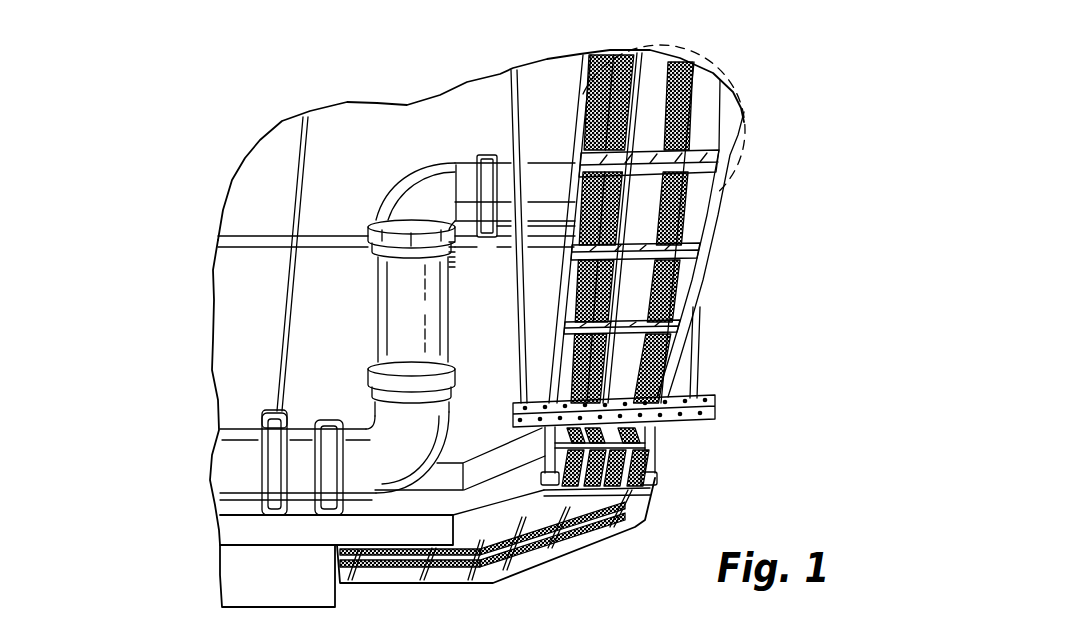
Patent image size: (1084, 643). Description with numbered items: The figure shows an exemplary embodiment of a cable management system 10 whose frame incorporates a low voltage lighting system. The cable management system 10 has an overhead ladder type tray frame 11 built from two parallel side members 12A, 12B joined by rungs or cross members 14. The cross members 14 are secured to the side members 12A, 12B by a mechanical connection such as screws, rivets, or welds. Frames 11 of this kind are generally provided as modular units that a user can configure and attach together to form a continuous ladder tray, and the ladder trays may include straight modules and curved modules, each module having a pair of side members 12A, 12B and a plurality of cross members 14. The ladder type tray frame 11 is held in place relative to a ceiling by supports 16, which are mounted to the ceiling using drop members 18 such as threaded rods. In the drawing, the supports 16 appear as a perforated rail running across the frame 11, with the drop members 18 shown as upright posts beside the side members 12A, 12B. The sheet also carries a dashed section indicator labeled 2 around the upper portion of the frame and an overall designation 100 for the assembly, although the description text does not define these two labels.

The ladder assembly 100 is at (643, 283).
The section line indicator 2 is at (731, 193).
The cable management system 10 is at (710, 285).
The ladder type tray frame 11 is at (658, 474).
The side member 12A is at (709, 232).
The side member 12B is at (566, 212).
The cross member 14 is at (597, 262).
The support 16 is at (686, 425).
The drop member 18 is at (524, 327).